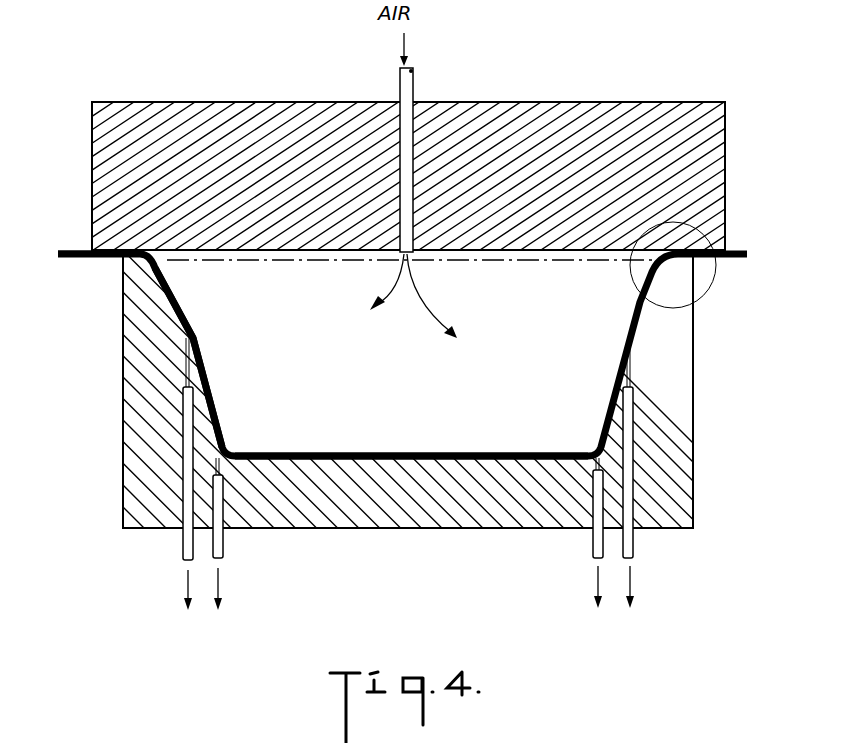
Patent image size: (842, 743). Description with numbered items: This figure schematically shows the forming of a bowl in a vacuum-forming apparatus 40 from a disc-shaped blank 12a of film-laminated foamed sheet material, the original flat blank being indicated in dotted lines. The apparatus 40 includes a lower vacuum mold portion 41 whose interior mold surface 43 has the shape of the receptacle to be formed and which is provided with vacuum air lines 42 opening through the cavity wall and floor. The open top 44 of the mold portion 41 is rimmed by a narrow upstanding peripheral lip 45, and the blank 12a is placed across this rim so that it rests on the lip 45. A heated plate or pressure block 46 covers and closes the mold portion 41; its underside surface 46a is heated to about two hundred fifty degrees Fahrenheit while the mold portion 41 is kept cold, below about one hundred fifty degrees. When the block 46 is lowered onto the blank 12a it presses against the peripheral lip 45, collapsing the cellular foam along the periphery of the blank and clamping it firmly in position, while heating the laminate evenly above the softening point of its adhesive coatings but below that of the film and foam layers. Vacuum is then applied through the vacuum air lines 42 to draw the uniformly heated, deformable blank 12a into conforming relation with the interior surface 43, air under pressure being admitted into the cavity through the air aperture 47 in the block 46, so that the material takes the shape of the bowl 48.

The apparatus 40 is at (110, 367).
The vacuum mold portion 41 is at (370, 522).
The vacuum air lines 42 is at (190, 512).
The interior mold surface 43 is at (197, 338).
The open top 44 is at (146, 271).
The peripheral lip 45 is at (133, 259).
The pressure block 46 is at (538, 123).
The underside surface 46a is at (488, 246).
The air aperture 47 is at (432, 103).
The bowl 48 is at (340, 452).
The disc-shaped blank 12a is at (275, 258).